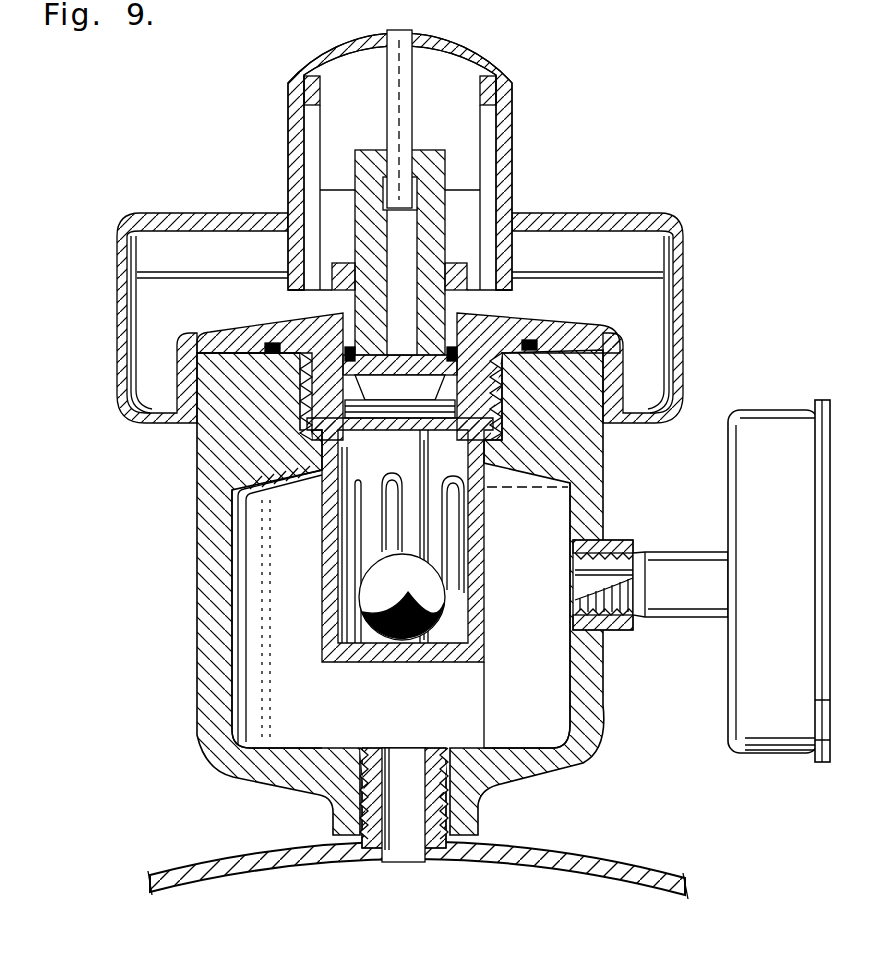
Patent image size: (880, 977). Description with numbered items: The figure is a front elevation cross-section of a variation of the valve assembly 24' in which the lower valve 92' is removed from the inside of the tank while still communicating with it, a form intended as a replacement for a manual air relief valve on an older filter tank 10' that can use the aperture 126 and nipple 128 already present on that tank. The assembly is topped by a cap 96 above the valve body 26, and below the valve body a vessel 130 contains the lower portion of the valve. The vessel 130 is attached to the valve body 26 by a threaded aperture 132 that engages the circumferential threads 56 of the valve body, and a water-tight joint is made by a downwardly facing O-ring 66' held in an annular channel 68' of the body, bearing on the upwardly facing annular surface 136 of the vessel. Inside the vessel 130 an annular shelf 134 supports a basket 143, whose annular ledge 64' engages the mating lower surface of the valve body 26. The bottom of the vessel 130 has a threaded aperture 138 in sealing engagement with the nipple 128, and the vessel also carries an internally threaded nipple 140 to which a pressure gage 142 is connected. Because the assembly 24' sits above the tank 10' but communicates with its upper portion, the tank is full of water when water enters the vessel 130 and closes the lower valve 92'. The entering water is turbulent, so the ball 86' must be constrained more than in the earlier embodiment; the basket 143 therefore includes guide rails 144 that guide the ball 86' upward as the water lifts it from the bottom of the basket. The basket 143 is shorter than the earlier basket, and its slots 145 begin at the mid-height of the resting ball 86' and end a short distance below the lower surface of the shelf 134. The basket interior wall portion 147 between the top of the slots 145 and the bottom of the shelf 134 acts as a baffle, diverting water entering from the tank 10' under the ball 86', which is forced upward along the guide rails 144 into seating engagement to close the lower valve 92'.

The filter tank 10' is at (418, 851).
The valve assembly 24' is at (441, 318).
The valve body 26 is at (543, 318).
The circumferential threads 56 is at (513, 412).
The annular ledge 64' is at (527, 495).
The O-ring 66' is at (372, 321).
The annular channel 68' is at (358, 325).
The ball 86' is at (402, 597).
The lower valve 92' is at (401, 615).
The cap 96 is at (532, 109).
The aperture 126 is at (413, 864).
The nipple 128 is at (372, 860).
The vessel 130 is at (592, 457).
The threaded aperture 132 is at (302, 413).
The annular shelf 134 is at (290, 486).
The annular surface 136 is at (224, 373).
The threaded aperture 138 is at (478, 747).
The internally threaded nipple 140 is at (607, 543).
The pressure gage 142 is at (778, 420).
The support basket 143 is at (480, 631).
The guide rails 144 is at (396, 478).
The slots 145 is at (458, 500).
The basket interior wall portion 147 is at (452, 470).